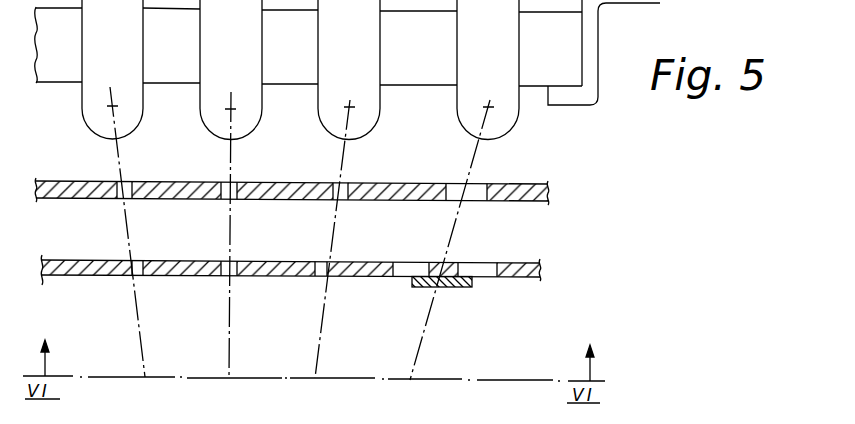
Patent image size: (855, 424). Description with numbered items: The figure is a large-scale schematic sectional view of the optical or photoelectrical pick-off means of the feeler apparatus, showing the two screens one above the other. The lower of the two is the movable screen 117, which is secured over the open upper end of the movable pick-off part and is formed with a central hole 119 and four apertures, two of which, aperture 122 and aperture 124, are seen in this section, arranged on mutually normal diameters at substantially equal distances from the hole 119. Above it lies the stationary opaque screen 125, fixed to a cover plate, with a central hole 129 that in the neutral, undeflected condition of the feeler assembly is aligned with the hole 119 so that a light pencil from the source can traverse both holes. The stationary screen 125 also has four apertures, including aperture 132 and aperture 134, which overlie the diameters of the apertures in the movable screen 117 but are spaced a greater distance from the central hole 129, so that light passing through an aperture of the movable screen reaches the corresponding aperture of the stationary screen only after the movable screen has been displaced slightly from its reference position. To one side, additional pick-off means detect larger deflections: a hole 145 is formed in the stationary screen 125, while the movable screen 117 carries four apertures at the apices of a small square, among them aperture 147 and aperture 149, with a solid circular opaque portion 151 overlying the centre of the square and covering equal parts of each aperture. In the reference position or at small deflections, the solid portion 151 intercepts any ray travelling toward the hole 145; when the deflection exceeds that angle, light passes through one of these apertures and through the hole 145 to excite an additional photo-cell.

The movable screen 117 is at (86, 252).
The central hole 119 is at (235, 262).
The aperture 122 is at (136, 272).
The aperture 124 is at (322, 277).
The stationary opaque screen 125 is at (82, 168).
The central hole 129 is at (236, 185).
The aperture 132 is at (127, 183).
The aperture 134 is at (343, 187).
The hole 145 is at (479, 191).
The aperture 147 is at (406, 276).
The aperture 149 is at (487, 272).
The solid circular opaque portion 151 is at (457, 287).